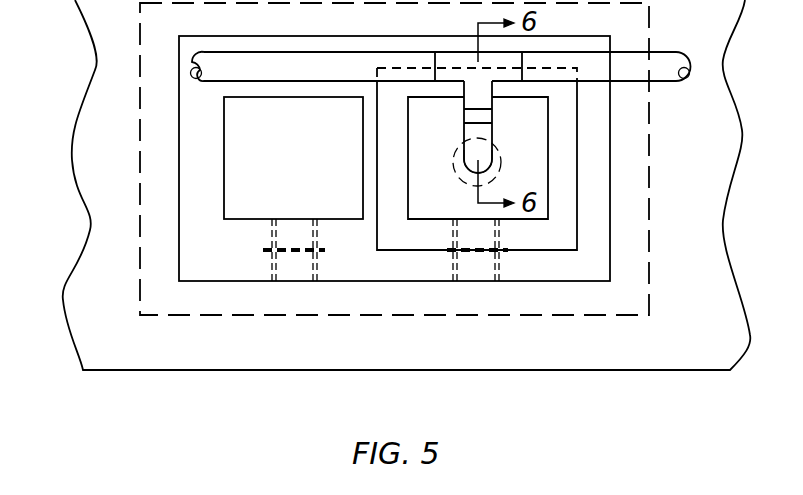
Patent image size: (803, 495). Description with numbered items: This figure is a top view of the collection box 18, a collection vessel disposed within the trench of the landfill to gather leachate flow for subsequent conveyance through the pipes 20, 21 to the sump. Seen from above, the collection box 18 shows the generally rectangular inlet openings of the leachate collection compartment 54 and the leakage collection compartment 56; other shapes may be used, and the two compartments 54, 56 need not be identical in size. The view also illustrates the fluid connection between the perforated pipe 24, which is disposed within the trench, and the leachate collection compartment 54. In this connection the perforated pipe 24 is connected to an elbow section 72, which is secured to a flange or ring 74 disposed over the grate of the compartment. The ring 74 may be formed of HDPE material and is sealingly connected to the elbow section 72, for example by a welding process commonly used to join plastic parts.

The collection box 18 is at (610, 225).
The pipe 20 is at (453, 235).
The pipe 21 is at (317, 237).
The perforated pipe 24 is at (660, 52).
The leachate collection compartment 54 is at (538, 132).
The leakage collection compartment 56 is at (310, 141).
The elbow section 72 is at (493, 167).
The ring 74 is at (502, 152).